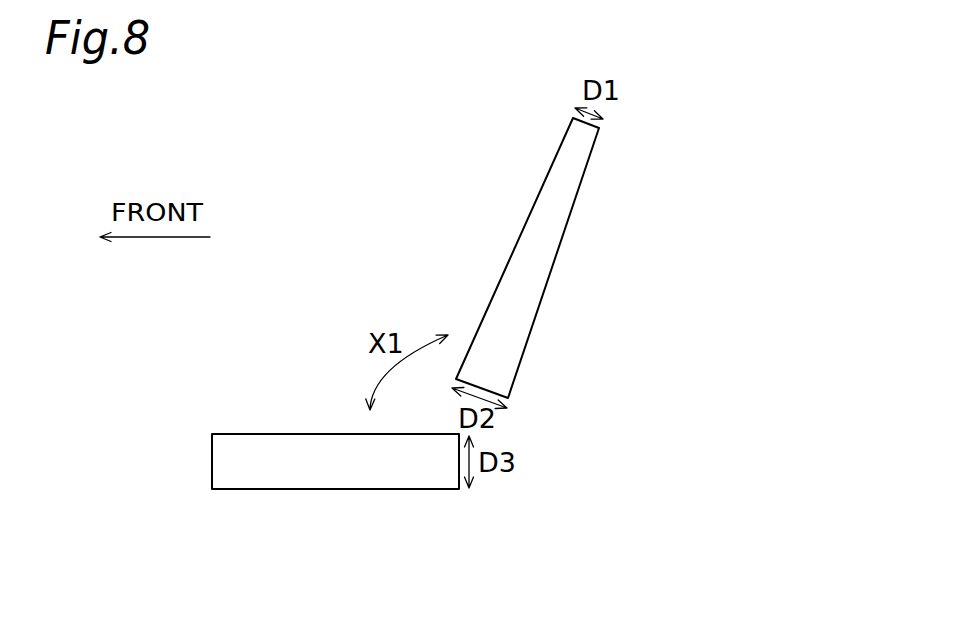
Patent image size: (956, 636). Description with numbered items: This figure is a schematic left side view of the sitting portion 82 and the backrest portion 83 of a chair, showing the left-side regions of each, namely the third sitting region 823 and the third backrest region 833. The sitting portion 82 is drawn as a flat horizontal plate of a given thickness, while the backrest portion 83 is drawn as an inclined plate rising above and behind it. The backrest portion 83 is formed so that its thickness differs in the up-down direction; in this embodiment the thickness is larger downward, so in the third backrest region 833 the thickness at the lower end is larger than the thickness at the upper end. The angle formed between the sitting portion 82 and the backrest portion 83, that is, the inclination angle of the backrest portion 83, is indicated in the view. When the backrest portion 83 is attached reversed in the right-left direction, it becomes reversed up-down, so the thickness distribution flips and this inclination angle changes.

The sitting portion 82 is at (172, 488).
The third sitting region 823 is at (328, 465).
The backrest portion 83 is at (558, 315).
The third backrest region 833 is at (508, 326).